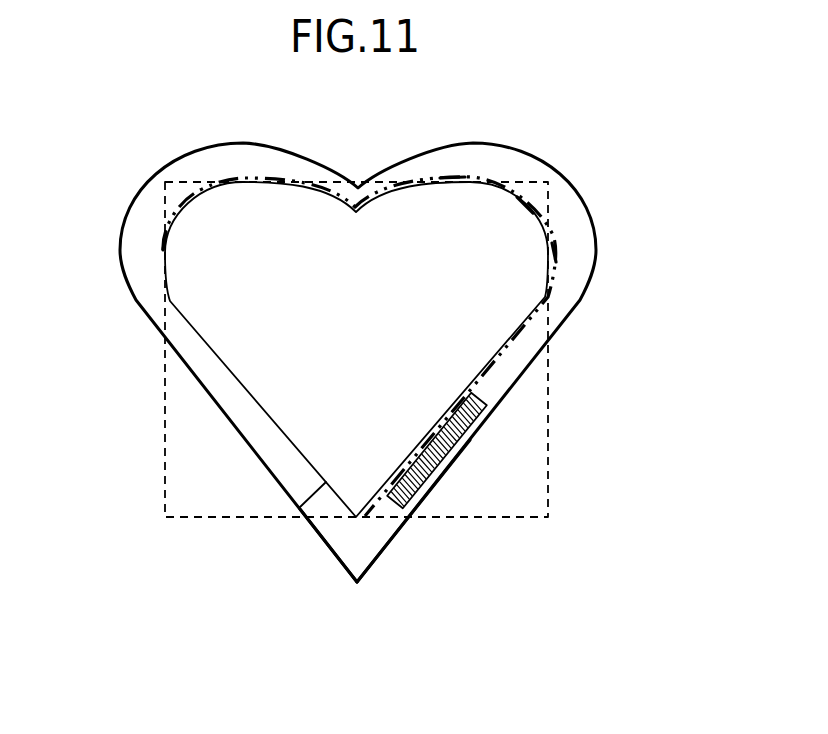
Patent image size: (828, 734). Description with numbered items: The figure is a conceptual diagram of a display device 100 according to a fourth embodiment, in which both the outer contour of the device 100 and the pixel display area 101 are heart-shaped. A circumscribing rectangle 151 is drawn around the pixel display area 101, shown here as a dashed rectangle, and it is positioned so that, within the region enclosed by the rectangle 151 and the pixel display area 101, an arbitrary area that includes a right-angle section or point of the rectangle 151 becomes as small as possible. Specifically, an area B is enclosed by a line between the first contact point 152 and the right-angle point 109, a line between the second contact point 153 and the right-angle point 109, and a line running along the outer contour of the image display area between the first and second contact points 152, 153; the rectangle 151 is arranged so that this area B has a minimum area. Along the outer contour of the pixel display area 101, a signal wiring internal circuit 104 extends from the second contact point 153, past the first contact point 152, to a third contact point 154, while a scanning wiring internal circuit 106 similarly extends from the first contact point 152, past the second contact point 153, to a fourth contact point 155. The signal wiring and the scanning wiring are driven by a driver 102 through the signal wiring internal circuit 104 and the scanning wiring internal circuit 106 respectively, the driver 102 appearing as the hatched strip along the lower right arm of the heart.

The display device 100 is at (393, 543).
The pixel display area 101 is at (299, 508).
The driver 102 is at (420, 495).
The signal wiring internal circuit 104 is at (190, 207).
The scanning wiring internal circuit 106 is at (508, 345).
The right-angle point 109 is at (553, 177).
The circumscribing rectangle 151 is at (548, 497).
The first contact point 152 is at (452, 176).
The second contact point 153 is at (558, 255).
The third contact point 154 is at (165, 250).
The fourth contact point 155 is at (332, 545).
The area B is at (535, 197).